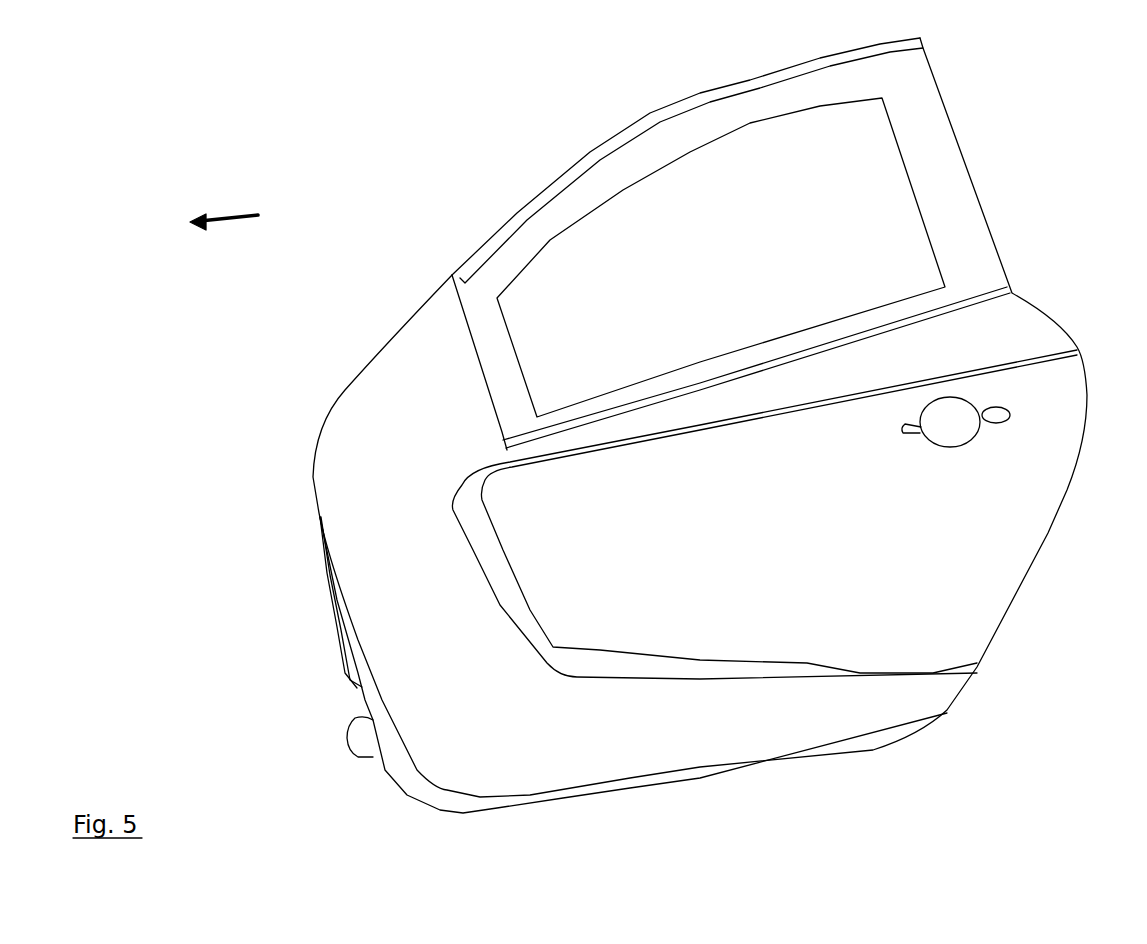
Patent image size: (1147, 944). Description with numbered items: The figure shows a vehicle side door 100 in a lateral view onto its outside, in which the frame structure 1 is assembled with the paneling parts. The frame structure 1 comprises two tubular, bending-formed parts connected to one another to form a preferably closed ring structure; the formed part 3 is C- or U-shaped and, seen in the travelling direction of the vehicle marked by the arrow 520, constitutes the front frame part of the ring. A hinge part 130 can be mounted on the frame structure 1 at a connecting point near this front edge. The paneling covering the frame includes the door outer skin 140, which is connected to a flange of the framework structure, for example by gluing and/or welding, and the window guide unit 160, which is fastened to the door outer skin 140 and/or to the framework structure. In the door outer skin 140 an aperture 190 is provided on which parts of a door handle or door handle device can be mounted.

The vehicle side door 100 is at (981, 130).
The window guide unit 160 is at (607, 177).
The aperture 190 is at (960, 420).
The door outer skin 140 is at (833, 713).
The hinge part 130 is at (350, 745).
The frame structure 1 is at (323, 593).
The formed part 3 is at (335, 635).
The arrow 520 is at (219, 223).